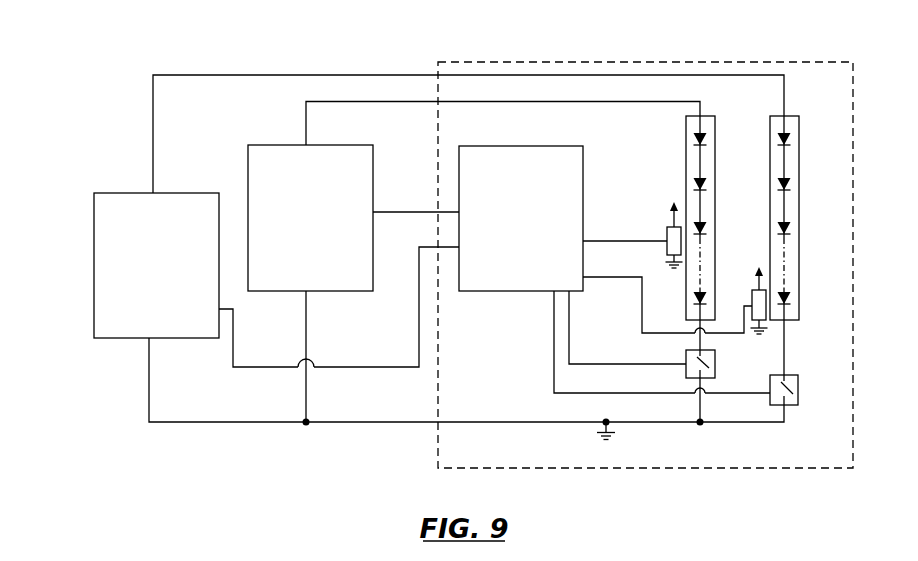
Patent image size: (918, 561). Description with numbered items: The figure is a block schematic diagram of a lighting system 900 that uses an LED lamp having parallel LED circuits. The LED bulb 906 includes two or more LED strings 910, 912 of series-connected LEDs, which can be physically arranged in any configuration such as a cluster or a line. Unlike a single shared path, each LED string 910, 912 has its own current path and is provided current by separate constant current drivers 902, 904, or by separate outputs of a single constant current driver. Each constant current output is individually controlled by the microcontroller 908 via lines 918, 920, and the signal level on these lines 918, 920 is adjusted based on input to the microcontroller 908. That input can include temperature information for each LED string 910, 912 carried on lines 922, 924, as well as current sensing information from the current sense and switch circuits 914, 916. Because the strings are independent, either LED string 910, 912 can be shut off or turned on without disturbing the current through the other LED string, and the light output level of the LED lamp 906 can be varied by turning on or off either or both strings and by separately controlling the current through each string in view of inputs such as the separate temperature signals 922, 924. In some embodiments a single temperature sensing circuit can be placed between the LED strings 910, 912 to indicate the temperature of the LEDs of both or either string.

The lighting system 900 is at (302, 50).
The constant current driver 902 is at (268, 145).
The constant current driver 904 is at (124, 193).
The LED bulb 906 is at (508, 62).
The microcontroller 908 is at (508, 291).
The LED string 910 is at (715, 127).
The LED string 912 is at (799, 127).
The current sense and switch circuit 914 is at (715, 373).
The current sense and switch circuit 916 is at (798, 381).
The line 918 is at (422, 212).
The line 920 is at (378, 371).
The line 922 is at (632, 239).
The line 924 is at (642, 328).